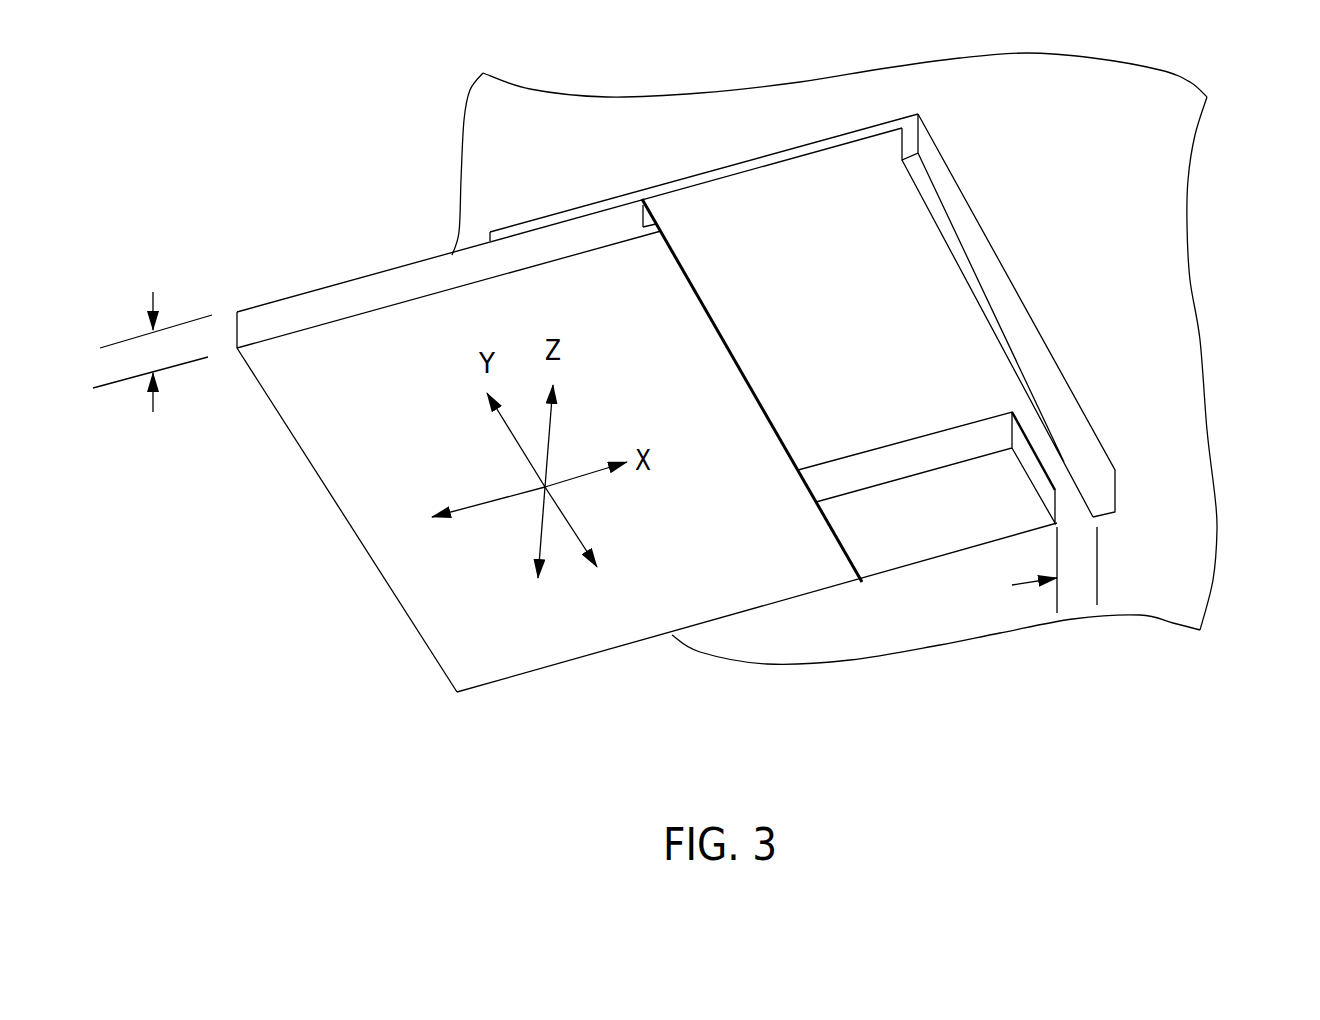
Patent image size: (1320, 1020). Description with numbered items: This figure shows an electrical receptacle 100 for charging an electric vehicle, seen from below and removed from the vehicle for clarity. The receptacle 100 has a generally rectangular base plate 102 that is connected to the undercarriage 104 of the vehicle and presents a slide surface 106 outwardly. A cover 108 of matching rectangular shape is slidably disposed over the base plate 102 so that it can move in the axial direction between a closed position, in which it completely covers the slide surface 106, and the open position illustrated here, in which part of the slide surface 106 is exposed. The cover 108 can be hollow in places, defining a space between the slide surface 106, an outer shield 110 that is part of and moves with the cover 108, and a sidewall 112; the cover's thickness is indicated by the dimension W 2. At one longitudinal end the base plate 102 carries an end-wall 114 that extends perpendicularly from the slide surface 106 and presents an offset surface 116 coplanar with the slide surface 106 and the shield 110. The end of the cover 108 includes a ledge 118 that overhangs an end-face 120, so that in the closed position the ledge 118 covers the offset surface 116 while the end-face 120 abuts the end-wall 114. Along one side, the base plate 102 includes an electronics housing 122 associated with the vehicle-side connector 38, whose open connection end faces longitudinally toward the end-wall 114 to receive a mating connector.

The electrical receptacle 100 is at (1238, 182).
The base plate 102 is at (767, 158).
The undercarriage 104 is at (977, 84).
The slide surface 106 is at (918, 340).
The cover 108 is at (420, 582).
The outer shield 110 is at (646, 597).
The sidewall 112 is at (437, 277).
The end-wall 114 is at (990, 258).
The offset surface 116 is at (935, 200).
The ledge 118 is at (667, 232).
The end-face 120 is at (642, 210).
The electronics housing 122 is at (913, 523).
The vehicle-side connector 38 is at (1050, 477).
The thickness dimension 2 is at (1098, 565).
The width dimension W is at (152, 352).